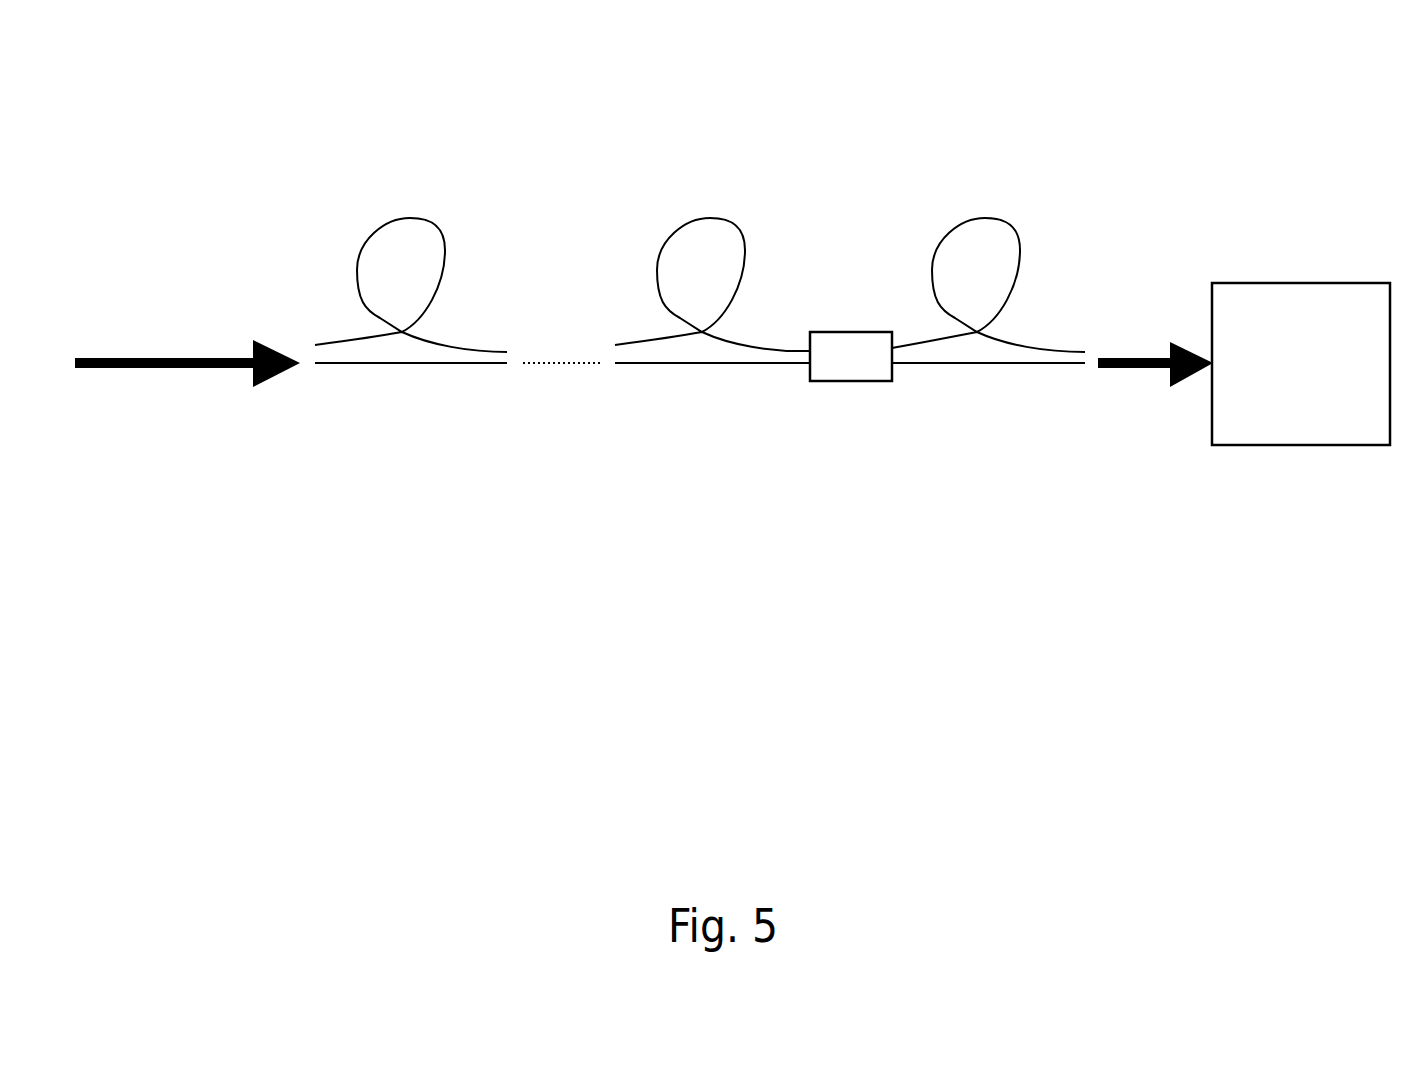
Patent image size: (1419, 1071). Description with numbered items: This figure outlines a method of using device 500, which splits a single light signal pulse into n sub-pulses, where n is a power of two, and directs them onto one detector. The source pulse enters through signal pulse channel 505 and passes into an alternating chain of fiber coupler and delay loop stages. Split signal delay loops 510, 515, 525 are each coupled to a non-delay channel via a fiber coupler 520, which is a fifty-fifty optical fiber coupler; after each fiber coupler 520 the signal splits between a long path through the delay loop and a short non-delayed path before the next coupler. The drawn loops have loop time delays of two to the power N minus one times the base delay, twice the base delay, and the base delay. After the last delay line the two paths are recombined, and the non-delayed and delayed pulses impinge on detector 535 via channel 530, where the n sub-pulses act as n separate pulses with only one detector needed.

The device 500 is at (340, 727).
The signal pulse channel 505 is at (123, 368).
The split signal delay loop 510 is at (410, 217).
The split signal delay loop 515 is at (710, 217).
The fiber coupler 520 is at (860, 332).
The split signal delay loop 525 is at (1005, 217).
The channel 530 is at (1132, 368).
The detector 535 is at (1342, 283).